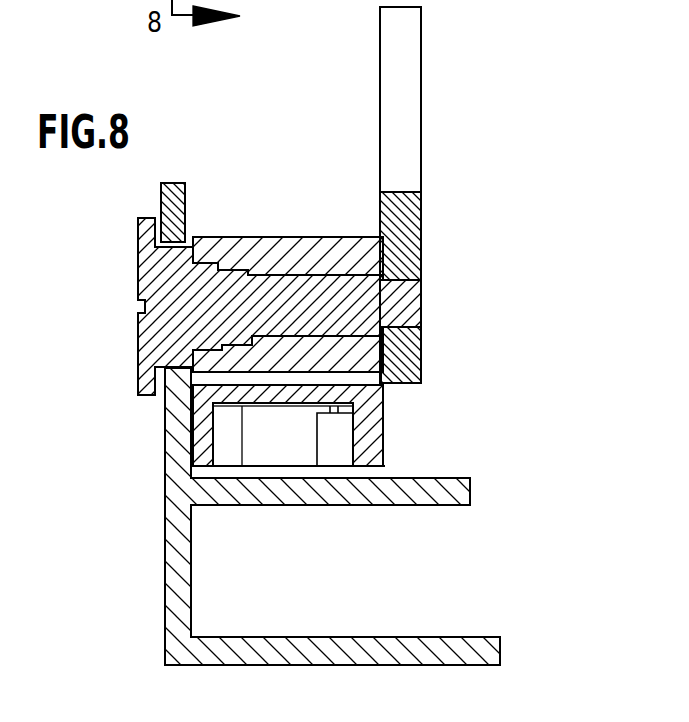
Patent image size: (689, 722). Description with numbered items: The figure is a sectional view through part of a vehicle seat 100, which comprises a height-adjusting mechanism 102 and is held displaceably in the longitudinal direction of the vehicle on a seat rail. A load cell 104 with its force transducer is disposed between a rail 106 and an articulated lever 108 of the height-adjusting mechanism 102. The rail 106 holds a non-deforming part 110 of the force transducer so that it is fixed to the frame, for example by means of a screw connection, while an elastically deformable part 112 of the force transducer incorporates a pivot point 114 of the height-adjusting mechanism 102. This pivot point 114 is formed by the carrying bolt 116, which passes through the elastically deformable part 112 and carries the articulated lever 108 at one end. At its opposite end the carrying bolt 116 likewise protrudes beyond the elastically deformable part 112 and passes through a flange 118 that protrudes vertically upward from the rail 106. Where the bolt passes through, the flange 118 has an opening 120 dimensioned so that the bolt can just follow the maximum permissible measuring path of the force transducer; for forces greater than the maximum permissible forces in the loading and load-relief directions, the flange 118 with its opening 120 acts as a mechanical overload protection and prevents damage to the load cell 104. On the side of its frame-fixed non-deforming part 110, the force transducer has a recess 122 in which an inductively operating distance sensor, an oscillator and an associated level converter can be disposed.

The vehicle seat 100 is at (468, 140).
The height-adjusting mechanism 102 is at (332, 110).
The load cell 104 is at (430, 402).
The rail 106 is at (130, 542).
The articulated lever 108 is at (397, 77).
The non-deforming part 110 is at (383, 446).
The elastically deformable part 112 is at (302, 258).
The pivot point 114 is at (455, 280).
The carrying bolt 116 is at (160, 266).
The flange 118 is at (165, 430).
The opening 120 is at (190, 238).
The recess 122 is at (347, 452).